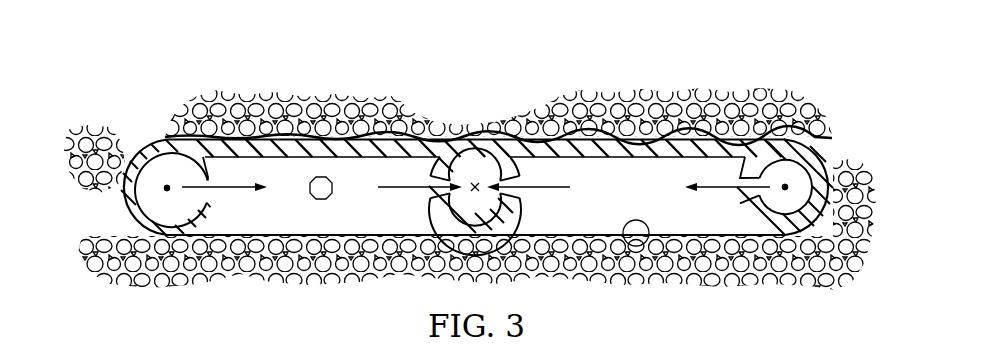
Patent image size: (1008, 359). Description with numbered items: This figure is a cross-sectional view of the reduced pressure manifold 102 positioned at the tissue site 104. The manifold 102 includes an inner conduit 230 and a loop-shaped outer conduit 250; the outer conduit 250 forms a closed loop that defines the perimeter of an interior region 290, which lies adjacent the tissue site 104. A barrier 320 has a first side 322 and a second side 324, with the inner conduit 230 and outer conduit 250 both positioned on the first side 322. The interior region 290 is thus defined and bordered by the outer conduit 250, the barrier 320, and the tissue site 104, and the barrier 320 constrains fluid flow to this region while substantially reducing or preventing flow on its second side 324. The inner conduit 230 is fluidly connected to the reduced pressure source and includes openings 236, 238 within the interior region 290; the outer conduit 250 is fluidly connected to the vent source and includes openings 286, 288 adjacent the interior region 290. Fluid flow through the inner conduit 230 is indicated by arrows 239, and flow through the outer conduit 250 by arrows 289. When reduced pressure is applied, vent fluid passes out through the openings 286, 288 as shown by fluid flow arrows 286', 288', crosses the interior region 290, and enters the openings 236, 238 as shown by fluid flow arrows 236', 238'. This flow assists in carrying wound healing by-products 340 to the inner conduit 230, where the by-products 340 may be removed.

The reduced pressure manifold 102 is at (667, 63).
The tissue site 104 is at (643, 245).
The inner conduit 230 is at (517, 223).
The opening 236 is at (411, 175).
The fluid flow arrow 236' is at (380, 212).
The opening 238 is at (540, 175).
The fluid flow arrow 238' is at (570, 213).
The fluid flow arrows 239 is at (474, 184).
The outer conduit 250 is at (142, 140).
The opening 286 is at (239, 175).
The fluid flow arrow 286' is at (260, 212).
The opening 288 is at (713, 176).
The fluid flow arrow 288' is at (689, 212).
The fluid flow arrows 289 is at (166, 188).
The interior region 290 is at (232, 223).
The barrier 320 is at (452, 148).
The first side 322 is at (613, 160).
The second side 324 is at (558, 105).
The wound healing by-products 340 is at (327, 200).